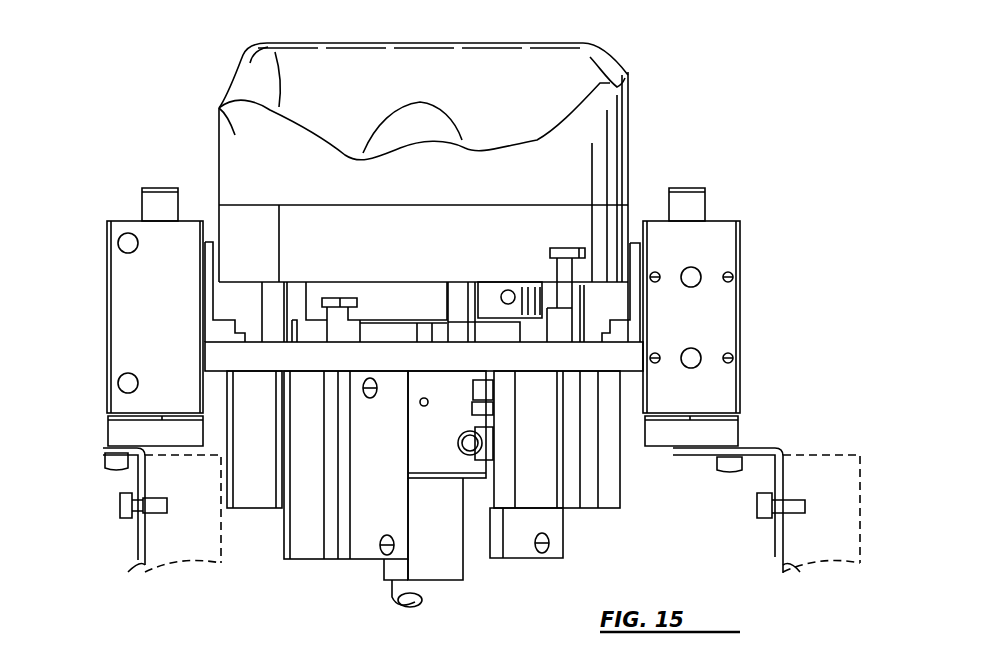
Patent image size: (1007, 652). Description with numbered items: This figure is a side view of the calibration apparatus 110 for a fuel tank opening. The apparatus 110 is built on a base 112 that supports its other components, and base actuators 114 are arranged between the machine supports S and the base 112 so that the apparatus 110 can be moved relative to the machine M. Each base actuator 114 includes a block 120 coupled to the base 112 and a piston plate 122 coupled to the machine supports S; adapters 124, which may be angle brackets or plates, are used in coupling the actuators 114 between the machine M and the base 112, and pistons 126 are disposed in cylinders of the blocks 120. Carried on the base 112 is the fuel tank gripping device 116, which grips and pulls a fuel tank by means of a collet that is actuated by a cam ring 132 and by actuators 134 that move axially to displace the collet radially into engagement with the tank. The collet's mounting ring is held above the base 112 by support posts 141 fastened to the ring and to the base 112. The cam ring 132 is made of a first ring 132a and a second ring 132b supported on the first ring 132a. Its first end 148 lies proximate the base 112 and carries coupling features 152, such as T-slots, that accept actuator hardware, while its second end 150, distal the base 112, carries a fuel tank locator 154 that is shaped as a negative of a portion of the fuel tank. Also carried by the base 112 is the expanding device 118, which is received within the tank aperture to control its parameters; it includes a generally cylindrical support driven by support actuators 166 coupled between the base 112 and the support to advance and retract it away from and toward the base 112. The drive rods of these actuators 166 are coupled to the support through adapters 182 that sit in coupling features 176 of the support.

The apparatus 110 is at (135, 60).
The base 112 is at (443, 368).
The base actuators 114 is at (105, 305).
The fuel tank gripping device 116 is at (210, 90).
The expanding device 118 is at (452, 40).
The blocks 120 is at (125, 262).
The piston plates 122 is at (108, 432).
The adapters 124 is at (135, 475).
The pistons 126 is at (150, 203).
The cam ring 132 is at (217, 204).
The first ring 132a is at (583, 290).
The second ring 132b is at (219, 108).
The actuators 134 is at (253, 520).
The support posts 141 is at (618, 250).
The first end 148 is at (605, 290).
The second end 150 is at (620, 58).
The coupling features 152 is at (563, 250).
The fuel tank locator 154 is at (525, 108).
The actuators 166 is at (362, 570).
The coupling features 176 is at (347, 310).
The adapters 182 is at (337, 323).
The machine supports S is at (140, 562).
The machine M is at (175, 575).